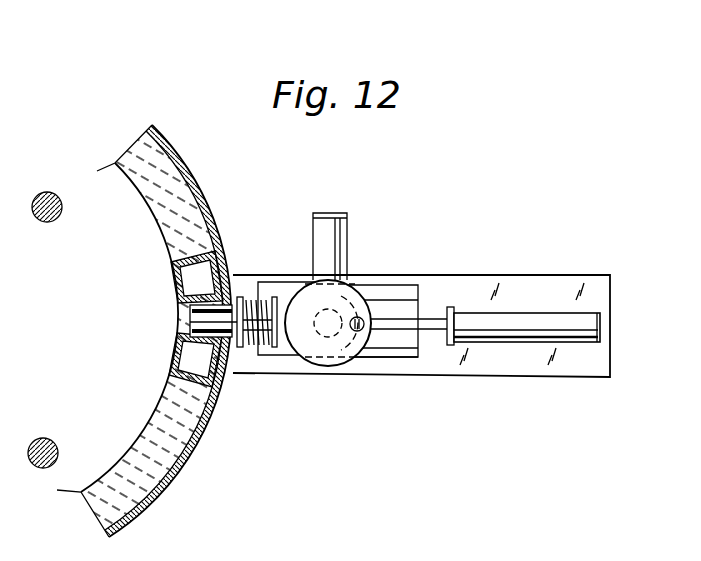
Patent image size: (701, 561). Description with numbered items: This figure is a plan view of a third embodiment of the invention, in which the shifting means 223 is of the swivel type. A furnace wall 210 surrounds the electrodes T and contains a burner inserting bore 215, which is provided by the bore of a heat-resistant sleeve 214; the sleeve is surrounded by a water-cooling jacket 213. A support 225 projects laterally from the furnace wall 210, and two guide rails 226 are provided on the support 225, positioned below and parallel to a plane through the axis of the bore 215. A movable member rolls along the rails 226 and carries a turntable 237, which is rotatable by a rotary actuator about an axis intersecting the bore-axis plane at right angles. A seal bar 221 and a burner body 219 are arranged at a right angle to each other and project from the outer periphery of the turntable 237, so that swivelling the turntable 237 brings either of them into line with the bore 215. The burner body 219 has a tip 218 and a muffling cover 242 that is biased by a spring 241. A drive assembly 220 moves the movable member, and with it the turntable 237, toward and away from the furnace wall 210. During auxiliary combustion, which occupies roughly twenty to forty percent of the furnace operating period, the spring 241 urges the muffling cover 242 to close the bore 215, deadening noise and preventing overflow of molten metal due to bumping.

The furnace wall 210 is at (200, 179).
The water-cooling jacket 213 is at (208, 256).
The heat-resistant sleeve 214 is at (180, 300).
The burner inserting bore 215 is at (178, 345).
The tip 218 is at (190, 323).
The burner body 219 is at (282, 290).
The drive assembly 220 is at (480, 345).
The seal bar 221 is at (334, 212).
The shifting means 223 is at (371, 289).
The support 225 is at (530, 378).
The guide rails 226 is at (405, 360).
The turntable 237 is at (333, 368).
The spring 241 is at (262, 358).
The muffling cover 242 is at (238, 360).
The electrodes T is at (61, 214).